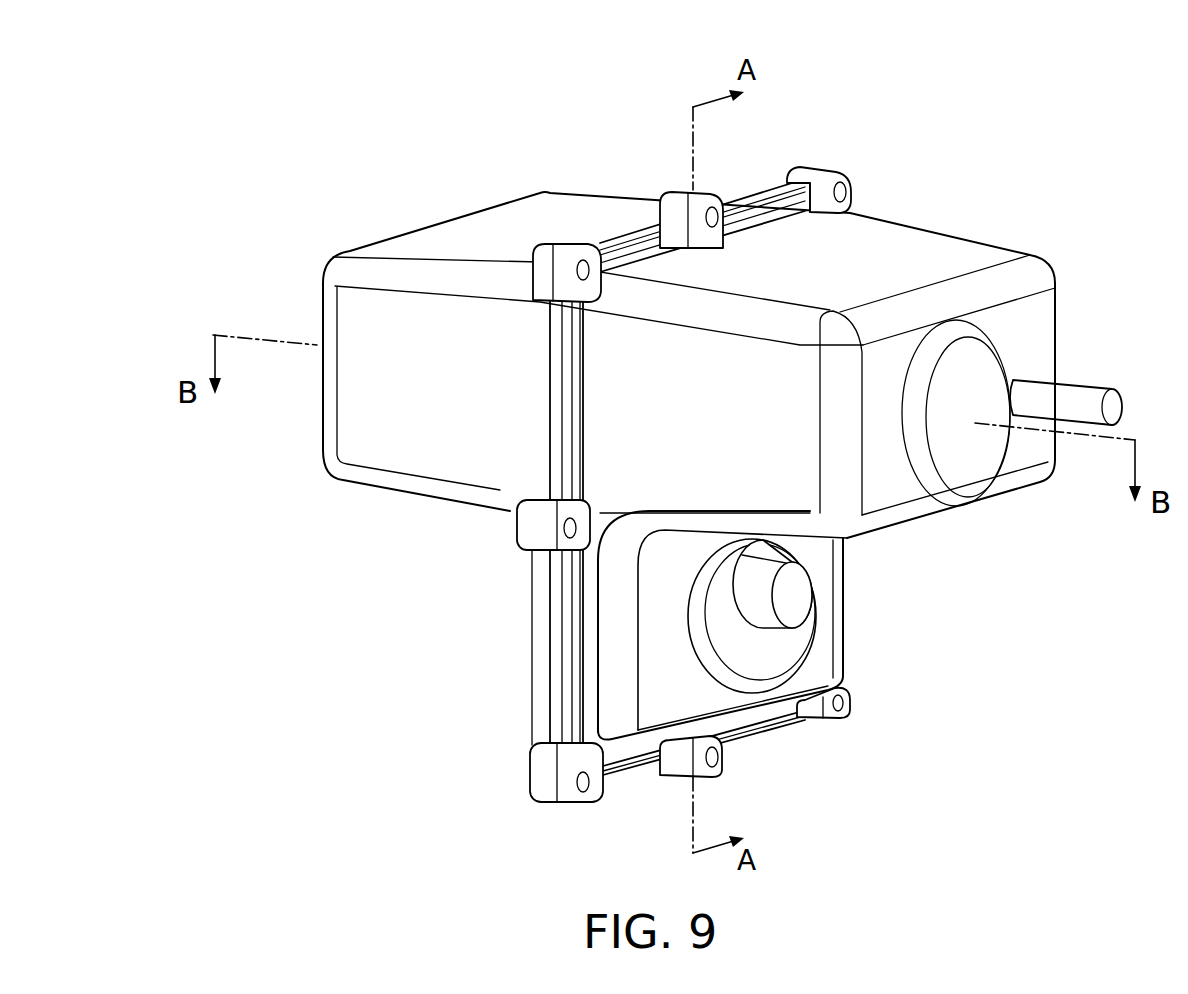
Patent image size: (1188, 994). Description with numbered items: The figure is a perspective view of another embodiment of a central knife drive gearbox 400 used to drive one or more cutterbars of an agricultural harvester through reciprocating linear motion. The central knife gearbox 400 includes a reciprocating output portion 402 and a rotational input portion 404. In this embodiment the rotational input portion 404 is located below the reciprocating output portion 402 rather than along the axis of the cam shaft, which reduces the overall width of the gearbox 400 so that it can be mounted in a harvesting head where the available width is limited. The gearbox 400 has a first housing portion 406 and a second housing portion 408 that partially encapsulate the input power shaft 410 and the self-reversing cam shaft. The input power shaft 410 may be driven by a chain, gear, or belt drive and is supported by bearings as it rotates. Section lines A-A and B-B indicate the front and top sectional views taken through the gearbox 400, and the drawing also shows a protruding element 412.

The central knife drive gearbox 400 is at (186, 104).
The reciprocating output portion 402 is at (215, 558).
The rotational input portion 404 is at (506, 836).
The first housing portion 406 is at (588, 195).
The second housing portion 408 is at (965, 243).
The input power shaft 410 is at (795, 605).
The vent tube 412 is at (1093, 383).